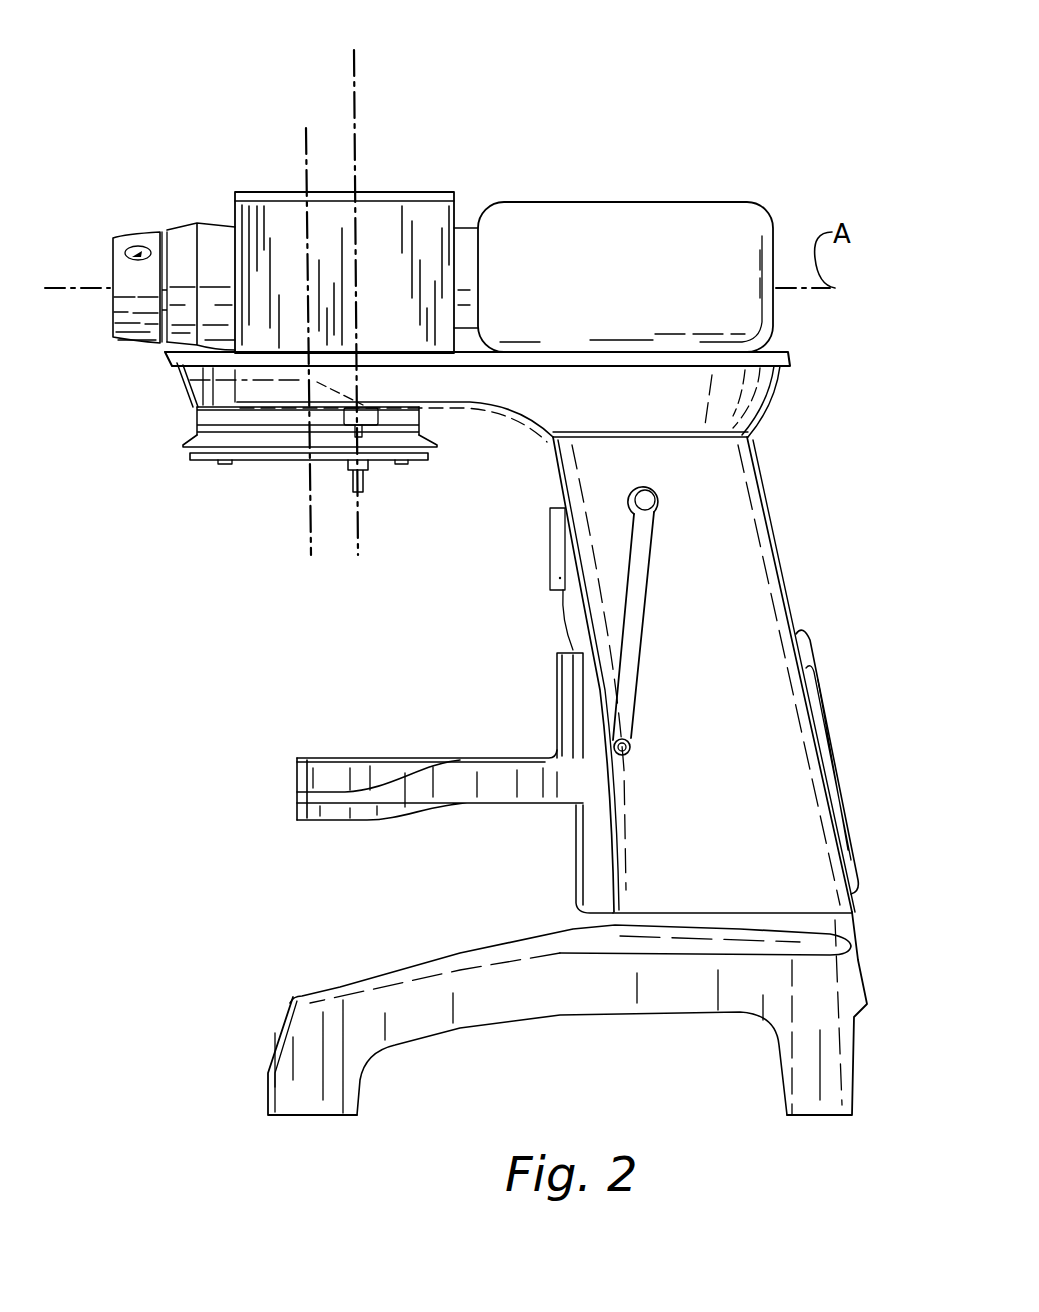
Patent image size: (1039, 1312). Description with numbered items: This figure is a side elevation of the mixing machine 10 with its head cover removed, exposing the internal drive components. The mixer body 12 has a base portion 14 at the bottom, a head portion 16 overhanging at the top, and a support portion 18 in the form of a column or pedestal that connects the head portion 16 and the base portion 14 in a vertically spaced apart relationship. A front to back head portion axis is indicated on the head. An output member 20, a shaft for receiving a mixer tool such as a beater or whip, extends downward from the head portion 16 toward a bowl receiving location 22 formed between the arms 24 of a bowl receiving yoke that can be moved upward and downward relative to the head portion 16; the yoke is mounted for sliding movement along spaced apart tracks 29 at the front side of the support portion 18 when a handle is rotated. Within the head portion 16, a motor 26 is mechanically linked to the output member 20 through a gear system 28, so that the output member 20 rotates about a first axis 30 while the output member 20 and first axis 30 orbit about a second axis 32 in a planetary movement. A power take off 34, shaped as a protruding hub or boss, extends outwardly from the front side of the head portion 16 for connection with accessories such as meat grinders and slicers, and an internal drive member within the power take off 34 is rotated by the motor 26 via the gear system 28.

The mixing machine 10 is at (760, 66).
The mixer body 12 is at (795, 490).
The base portion 14 is at (262, 1030).
The head portion 16 is at (207, 150).
The support portion 18 is at (807, 605).
The output member 20 is at (368, 483).
The bowl receiving location 22 is at (418, 700).
The arms 24 is at (405, 758).
The motor 26 is at (632, 247).
The gear system 28 is at (390, 240).
The tracks 29 is at (583, 850).
The first axis 30 is at (353, 77).
The second axis 32 is at (306, 153).
The power take off 34 is at (140, 235).